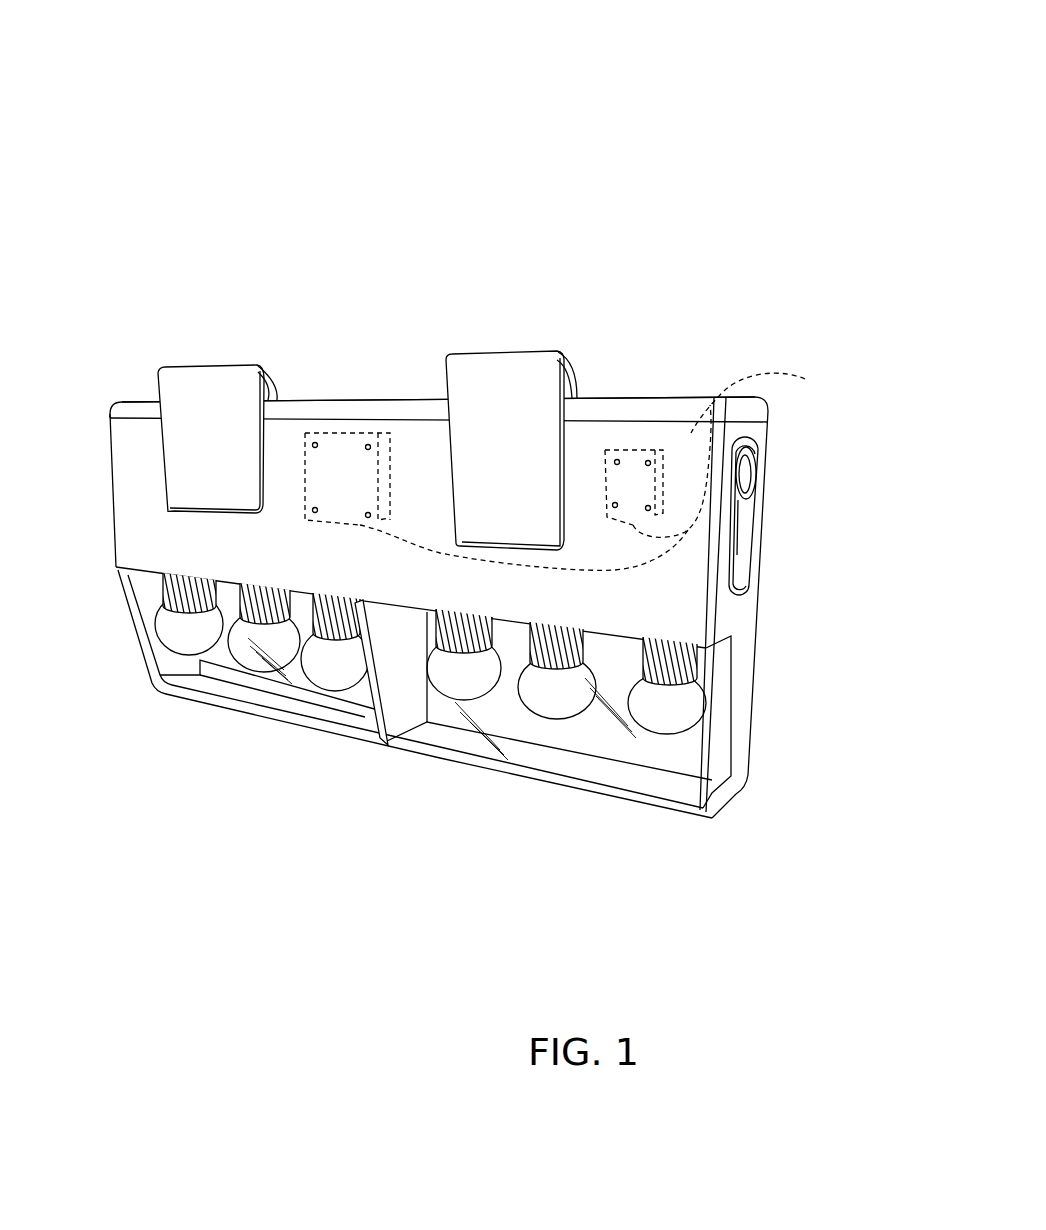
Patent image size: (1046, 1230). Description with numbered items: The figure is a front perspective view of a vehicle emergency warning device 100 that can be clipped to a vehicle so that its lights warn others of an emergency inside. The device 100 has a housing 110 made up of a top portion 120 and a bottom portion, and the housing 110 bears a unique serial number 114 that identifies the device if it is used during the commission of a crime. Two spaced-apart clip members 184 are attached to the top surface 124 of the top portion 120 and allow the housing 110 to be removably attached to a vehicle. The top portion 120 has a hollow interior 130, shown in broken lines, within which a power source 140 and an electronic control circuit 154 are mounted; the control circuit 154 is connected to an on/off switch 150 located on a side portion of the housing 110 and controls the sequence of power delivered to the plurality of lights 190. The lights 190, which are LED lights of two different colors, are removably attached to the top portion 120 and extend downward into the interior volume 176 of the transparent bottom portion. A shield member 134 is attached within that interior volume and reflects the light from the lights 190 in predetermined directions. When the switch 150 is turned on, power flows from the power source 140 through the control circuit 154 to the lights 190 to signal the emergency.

The vehicle emergency warning device 100 is at (650, 98).
The housing 110 is at (768, 499).
The unique serial number 114 is at (696, 631).
The top portion 120 is at (108, 457).
The top surface 124 is at (590, 394).
The hollow interior 130 is at (413, 448).
The shield member 134 is at (394, 716).
The power source 140 is at (350, 426).
The on/off switch 150 is at (757, 448).
The electronic control circuit 154 is at (631, 440).
The interior volume 176 is at (687, 442).
The mounting clip 184 is at (192, 360).
The plurality of lights 190 is at (188, 664).